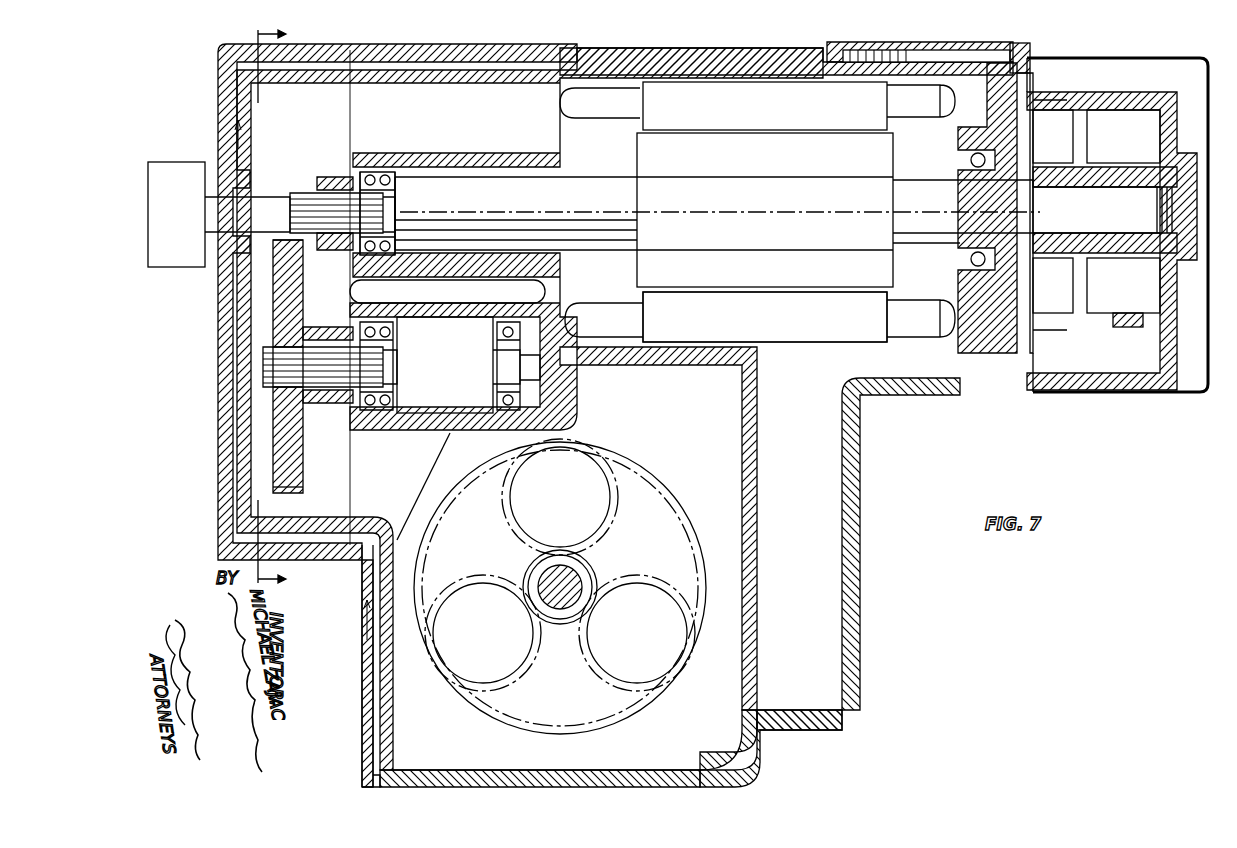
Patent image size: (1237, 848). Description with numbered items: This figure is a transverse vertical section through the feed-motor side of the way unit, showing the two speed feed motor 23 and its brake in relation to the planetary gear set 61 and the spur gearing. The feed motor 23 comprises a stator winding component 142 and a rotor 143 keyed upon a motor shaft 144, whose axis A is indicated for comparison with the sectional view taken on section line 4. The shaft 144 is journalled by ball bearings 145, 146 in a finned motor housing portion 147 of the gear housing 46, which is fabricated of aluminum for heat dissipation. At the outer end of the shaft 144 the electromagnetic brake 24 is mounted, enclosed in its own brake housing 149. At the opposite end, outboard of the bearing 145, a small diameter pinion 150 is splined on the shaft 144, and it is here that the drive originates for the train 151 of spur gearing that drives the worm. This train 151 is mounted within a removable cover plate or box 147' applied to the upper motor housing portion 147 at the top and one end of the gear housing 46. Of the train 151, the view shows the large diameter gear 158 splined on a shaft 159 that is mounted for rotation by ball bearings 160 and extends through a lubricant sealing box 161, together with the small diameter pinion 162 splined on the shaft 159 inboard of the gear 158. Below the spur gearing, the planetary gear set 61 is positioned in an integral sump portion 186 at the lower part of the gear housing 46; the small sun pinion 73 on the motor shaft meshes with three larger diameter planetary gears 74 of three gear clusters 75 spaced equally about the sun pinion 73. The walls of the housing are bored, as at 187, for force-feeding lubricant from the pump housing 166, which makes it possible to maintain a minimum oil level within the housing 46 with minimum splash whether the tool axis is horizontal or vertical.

The section line 4- 4 is at (295, 308).
The two speed feed motor 23 is at (897, 141).
The electromagnetic brake 24 is at (1092, 317).
The gear housing 46 is at (762, 750).
The planetary gear set 61 is at (650, 702).
The planetary sun pinion 73 is at (582, 580).
The planetary gears 74 is at (478, 578).
The gear clusters 75 is at (617, 517).
The stator winding component 142 is at (875, 305).
The rotor 143 is at (648, 275).
The motor shaft 144 is at (598, 180).
The ball bearing 145 is at (385, 172).
The ball bearing 146 is at (971, 163).
The motor housing portion 147 is at (795, 48).
The removable cover plate or box 147' is at (370, 408).
The brake housing 149 is at (1110, 395).
The pinion 150 is at (330, 178).
The train of spur gearing 151 is at (307, 460).
The large diameter gear 158 is at (303, 306).
The shaft 159 is at (290, 383).
The ball bearings 160 is at (385, 410).
The lubricant sealing box 161 is at (445, 325).
The pinion 162 is at (320, 403).
The pump housing 166 is at (173, 260).
The sump portion 186 is at (597, 768).
The bore 187 is at (373, 613).
The axis A is at (660, 212).